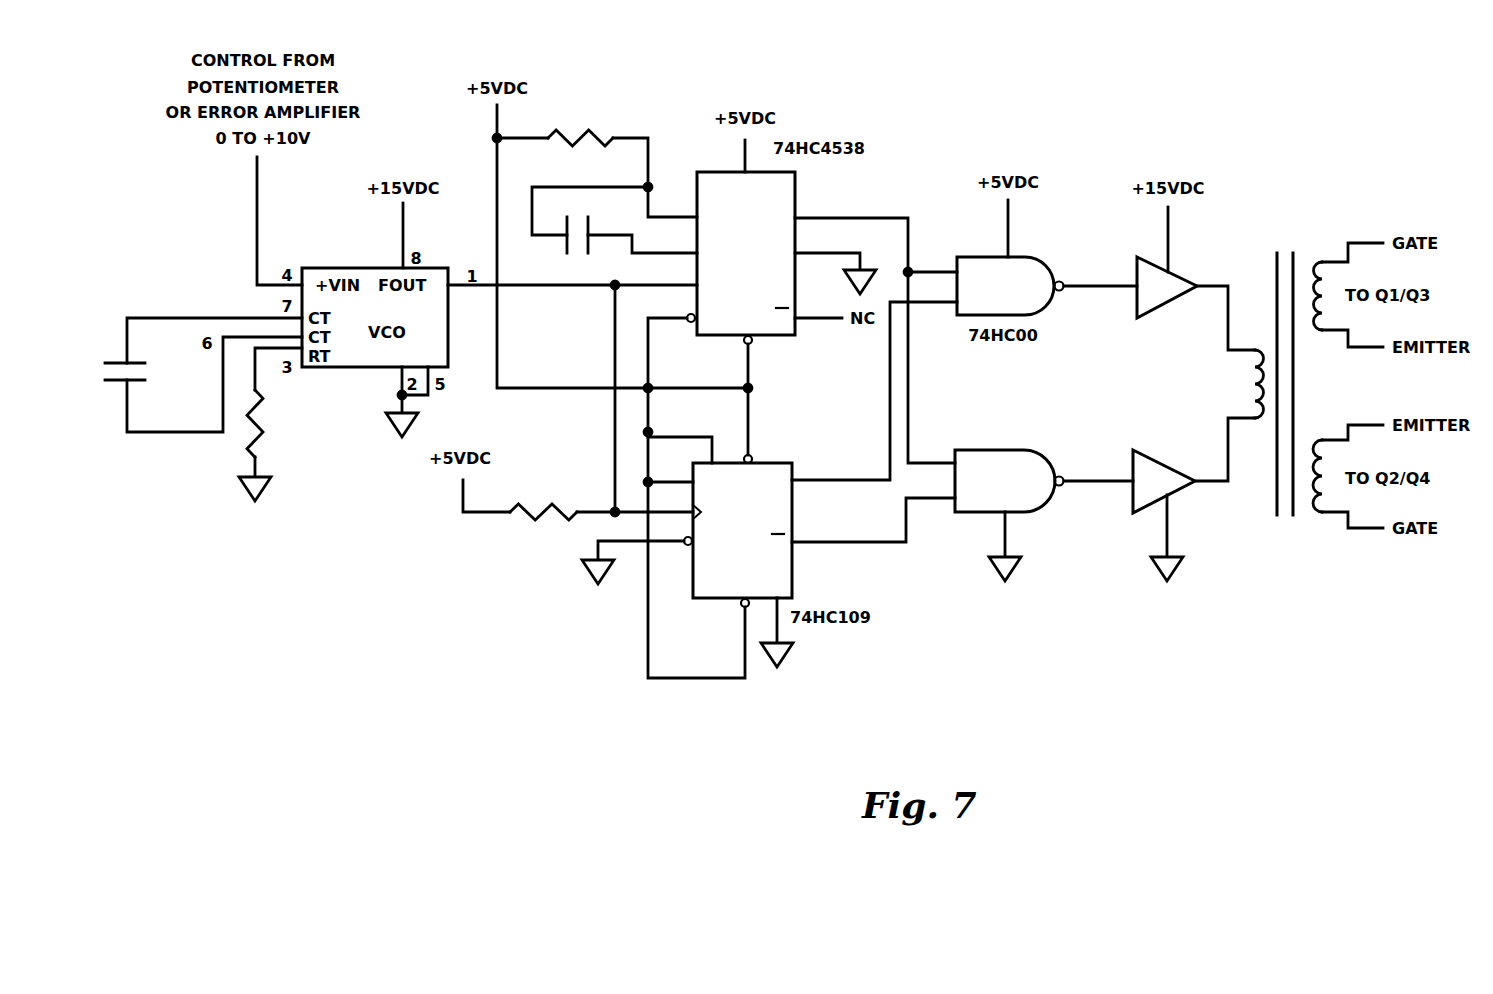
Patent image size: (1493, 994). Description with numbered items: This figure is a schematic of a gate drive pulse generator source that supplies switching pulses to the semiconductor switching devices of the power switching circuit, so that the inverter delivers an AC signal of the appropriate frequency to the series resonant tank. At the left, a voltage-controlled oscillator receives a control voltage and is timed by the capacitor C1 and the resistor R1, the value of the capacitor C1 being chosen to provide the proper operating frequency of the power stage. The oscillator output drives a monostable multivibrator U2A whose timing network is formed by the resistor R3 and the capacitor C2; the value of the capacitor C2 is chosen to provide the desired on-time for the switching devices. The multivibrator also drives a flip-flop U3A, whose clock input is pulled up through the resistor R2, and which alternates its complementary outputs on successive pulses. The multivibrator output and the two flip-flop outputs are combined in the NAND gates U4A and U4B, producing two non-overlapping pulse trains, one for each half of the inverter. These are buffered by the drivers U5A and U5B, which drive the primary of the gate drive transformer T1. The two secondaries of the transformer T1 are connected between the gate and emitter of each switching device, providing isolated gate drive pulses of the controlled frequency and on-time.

The capacitor C1 is at (142, 373).
The timing resistor 7.5K R1 is at (279, 423).
The pull-up resistor 2K R2 is at (543, 515).
The timing resistor 10K R3 is at (580, 139).
The capacitor C2 is at (593, 230).
The monostable multivibrator 74HC4538 U2A is at (740, 254).
The JK flip-flop 74HC109 U3A is at (740, 526).
The NAND gate 74HC00 U4A is at (1004, 257).
The NAND gate 74HC00 U4B is at (1004, 512).
The driver UC3708 U5A is at (1169, 286).
The driver UC3708 U5B is at (1169, 508).
The gate drive transformer 1:1:1 T1 is at (1319, 385).